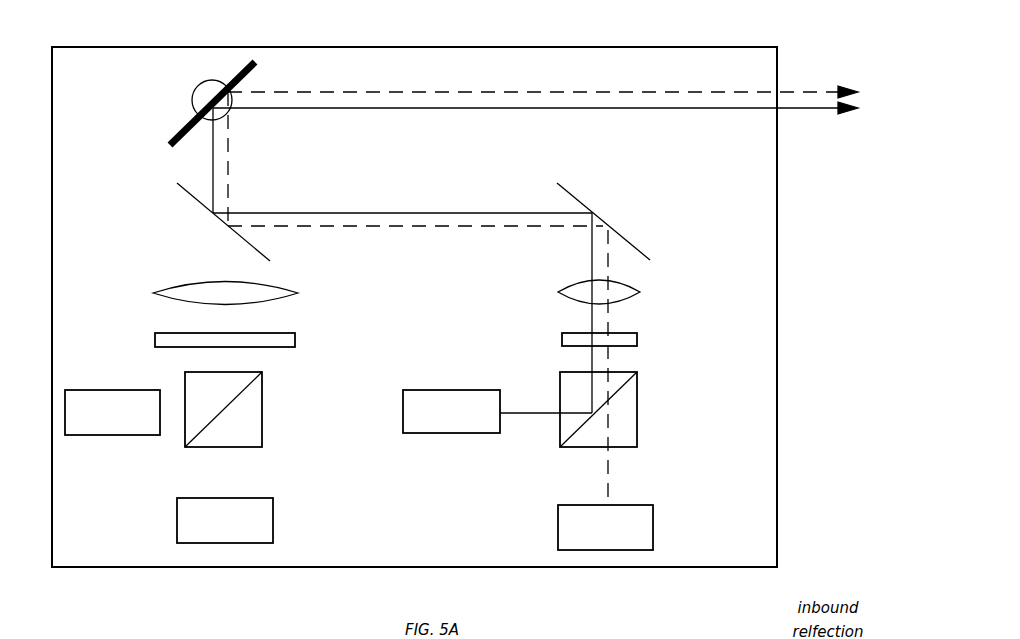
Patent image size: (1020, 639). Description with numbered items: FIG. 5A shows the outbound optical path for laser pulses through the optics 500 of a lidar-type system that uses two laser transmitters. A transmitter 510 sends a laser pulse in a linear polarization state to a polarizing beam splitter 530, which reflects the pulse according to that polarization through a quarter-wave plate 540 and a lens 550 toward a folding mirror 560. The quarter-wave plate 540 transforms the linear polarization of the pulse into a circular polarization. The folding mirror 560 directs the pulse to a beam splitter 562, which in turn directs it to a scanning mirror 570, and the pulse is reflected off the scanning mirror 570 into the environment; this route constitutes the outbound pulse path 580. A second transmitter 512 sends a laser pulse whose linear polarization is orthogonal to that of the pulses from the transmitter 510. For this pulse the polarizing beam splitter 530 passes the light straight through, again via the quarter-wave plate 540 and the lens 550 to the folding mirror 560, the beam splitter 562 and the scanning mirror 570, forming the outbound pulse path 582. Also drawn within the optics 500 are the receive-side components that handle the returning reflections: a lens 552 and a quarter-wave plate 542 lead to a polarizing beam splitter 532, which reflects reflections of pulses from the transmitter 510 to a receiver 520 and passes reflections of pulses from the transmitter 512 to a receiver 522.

The optics 500 is at (414, 307).
The scanning mirror 570 is at (197, 120).
The beam splitter 562 is at (177, 183).
The folding mirror 560 is at (562, 187).
The outbound pulse path 580 is at (820, 92).
The outbound pulse path 582 is at (810, 108).
The lens 552 is at (155, 293).
The lens 550 is at (560, 293).
The quarter-wave plate 542 is at (295, 339).
The quarter-wave plate 540 is at (640, 340).
The receiver 520 is at (112, 412).
The receiver 522 is at (225, 520).
The transmitter 510 is at (497, 411).
The transmitter 512 is at (605, 527).
The polarizing beam splitter 532 is at (262, 428).
The polarizing beam splitter 530 is at (640, 430).